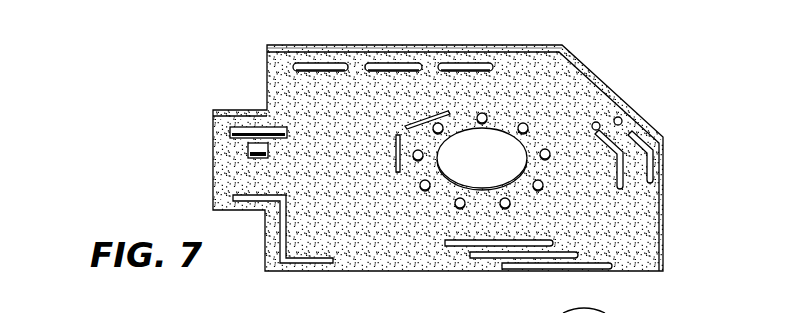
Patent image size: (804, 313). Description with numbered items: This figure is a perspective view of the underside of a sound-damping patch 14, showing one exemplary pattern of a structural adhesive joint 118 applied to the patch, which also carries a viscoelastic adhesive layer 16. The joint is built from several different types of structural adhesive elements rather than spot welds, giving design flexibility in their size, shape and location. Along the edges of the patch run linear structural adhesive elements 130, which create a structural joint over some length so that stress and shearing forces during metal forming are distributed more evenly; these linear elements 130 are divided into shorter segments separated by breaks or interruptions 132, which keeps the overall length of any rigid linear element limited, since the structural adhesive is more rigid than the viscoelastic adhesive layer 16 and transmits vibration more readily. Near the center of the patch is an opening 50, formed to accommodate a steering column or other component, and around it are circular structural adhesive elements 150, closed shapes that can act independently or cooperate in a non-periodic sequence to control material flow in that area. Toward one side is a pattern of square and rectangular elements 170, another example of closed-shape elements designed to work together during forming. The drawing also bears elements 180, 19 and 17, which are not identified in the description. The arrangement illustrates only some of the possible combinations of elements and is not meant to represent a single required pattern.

The sound-damping patch 14 is at (266, 63).
The viscoelastic adhesive layer 16 is at (498, 105).
The linear structural adhesive elements 130 is at (373, 67).
The breaks or interruptions 132 is at (355, 64).
The opening 50 is at (508, 151).
The structural adhesive joint 118 is at (412, 191).
The circular structural adhesive elements 150 is at (552, 158).
The square and rectangular structural adhesive elements 170 is at (250, 152).
The stepped slot 180 is at (280, 253).
The component 19 is at (282, 309).
The component 17 is at (396, 309).